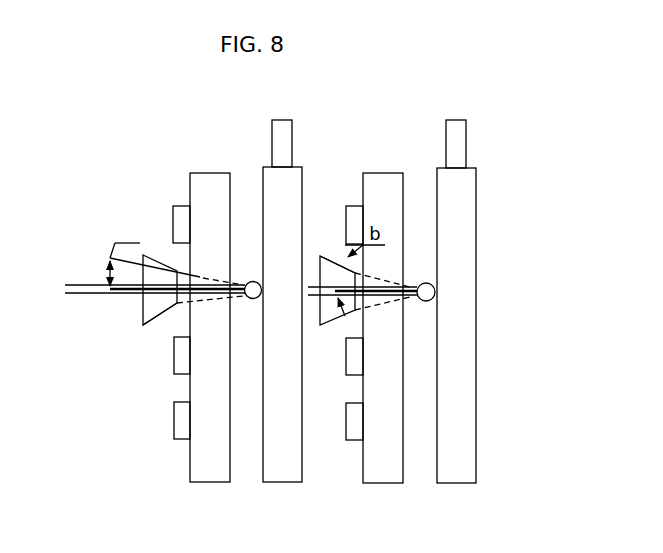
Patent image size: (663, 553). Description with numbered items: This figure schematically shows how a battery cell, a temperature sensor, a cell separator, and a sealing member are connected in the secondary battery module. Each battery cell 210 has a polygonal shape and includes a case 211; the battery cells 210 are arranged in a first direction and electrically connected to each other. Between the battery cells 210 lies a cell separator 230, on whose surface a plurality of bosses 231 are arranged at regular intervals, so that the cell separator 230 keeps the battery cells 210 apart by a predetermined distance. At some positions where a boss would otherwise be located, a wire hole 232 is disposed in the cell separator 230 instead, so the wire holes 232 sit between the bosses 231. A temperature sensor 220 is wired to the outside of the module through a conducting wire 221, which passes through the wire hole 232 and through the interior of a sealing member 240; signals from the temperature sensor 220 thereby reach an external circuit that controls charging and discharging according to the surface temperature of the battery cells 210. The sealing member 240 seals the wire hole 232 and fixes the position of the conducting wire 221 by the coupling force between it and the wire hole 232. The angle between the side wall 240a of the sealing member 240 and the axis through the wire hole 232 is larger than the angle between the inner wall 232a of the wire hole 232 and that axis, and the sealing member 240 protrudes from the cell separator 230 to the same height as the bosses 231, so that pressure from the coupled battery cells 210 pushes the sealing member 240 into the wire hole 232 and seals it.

The battery cell 210 is at (307, 152).
The case 211 is at (282, 125).
The temperature sensor 220 is at (253, 299).
The conducting wire 221 is at (83, 293).
The cell separator 230 is at (212, 172).
The boss 231 is at (178, 207).
The wire hole 232 is at (212, 310).
The inner wall 232a is at (190, 300).
The sealing member 240 is at (328, 270).
The side wall 240a is at (342, 263).